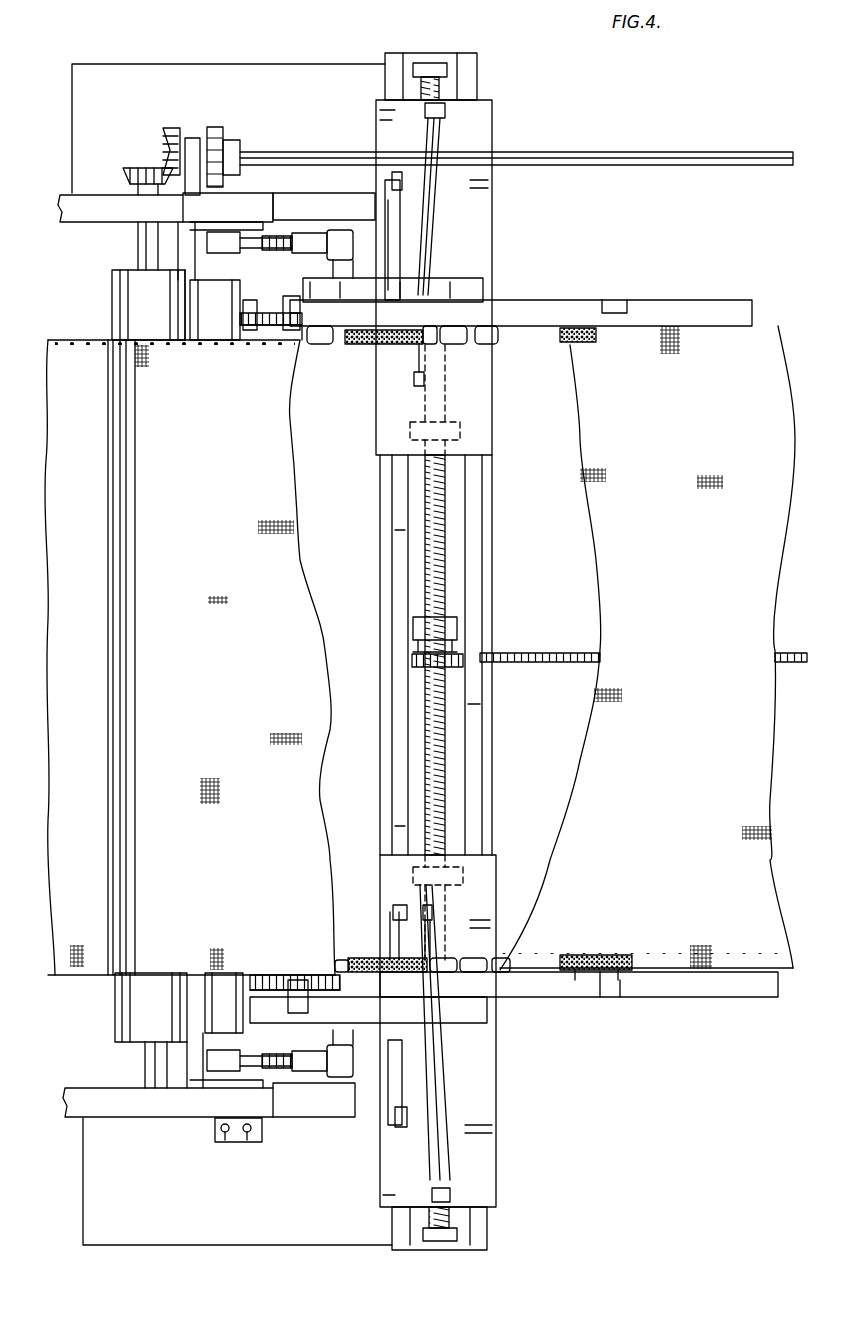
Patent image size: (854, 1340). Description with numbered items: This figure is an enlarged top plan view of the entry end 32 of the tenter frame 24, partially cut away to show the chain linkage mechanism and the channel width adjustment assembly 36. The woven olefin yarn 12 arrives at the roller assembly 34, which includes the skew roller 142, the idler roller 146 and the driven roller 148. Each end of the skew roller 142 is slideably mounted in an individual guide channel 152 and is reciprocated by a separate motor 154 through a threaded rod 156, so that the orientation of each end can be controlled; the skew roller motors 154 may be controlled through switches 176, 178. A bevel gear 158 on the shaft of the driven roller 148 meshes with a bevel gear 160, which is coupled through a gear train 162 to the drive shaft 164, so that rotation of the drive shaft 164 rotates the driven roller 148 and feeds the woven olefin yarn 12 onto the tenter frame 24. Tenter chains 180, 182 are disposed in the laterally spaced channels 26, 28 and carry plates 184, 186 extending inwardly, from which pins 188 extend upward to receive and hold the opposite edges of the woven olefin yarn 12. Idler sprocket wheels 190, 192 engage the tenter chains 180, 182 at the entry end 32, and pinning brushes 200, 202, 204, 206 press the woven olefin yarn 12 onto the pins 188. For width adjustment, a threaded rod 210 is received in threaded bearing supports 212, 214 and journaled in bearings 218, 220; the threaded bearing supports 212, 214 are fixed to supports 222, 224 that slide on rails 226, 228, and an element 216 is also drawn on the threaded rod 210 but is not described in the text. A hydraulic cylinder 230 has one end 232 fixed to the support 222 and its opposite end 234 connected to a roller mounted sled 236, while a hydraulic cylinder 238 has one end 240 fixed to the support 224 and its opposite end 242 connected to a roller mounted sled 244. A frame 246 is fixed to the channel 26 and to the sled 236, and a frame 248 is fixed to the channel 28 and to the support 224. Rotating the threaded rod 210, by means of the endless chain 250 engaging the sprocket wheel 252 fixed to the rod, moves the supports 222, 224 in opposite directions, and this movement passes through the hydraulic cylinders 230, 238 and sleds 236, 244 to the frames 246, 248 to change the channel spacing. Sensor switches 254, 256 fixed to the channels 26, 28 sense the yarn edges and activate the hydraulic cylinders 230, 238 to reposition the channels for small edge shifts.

The woven olefin yarn 12 is at (768, 590).
The tenter frame 24 is at (733, 286).
The channel 26 is at (745, 997).
The channel 28 is at (752, 310).
The entry end 32 is at (440, 1033).
The roller assembly 34 is at (78, 291).
The channel width adjustment assembly 36 is at (478, 1113).
The skew roller 142 is at (238, 975).
The idler roller 146 is at (203, 342).
The driven roller 148 is at (118, 312).
The guide channel 152 is at (195, 215).
The motor 154 is at (350, 948).
The threaded rod 156 is at (282, 232).
The bevel gear 158 is at (132, 165).
The bevel gear 160 is at (170, 130).
The gear train 162 is at (223, 130).
The drive shaft 164 is at (300, 160).
The switch 176 is at (222, 1140).
The switch 178 is at (255, 1132).
The tenter chain 180 is at (325, 972).
The tenter chain 182 is at (270, 340).
The plate 184 is at (490, 958).
The plate 186 is at (495, 346).
The pin 188 is at (636, 960).
The idler sprocket wheel 190 is at (248, 993).
The idler sprocket wheel 192 is at (250, 300).
The pinning brush 200 is at (375, 956).
The pinning brush 202 is at (585, 955).
The pinning brush 204 is at (372, 346).
The pinning brush 206 is at (590, 344).
The threaded rod 210 is at (450, 792).
The threaded bearing support 212 is at (464, 870).
The threaded bearing support 214 is at (461, 432).
The nut 216 is at (412, 632).
The bearing 218 is at (440, 62).
The bearing 220 is at (445, 1250).
The support 222 is at (498, 1088).
The support 224 is at (492, 246).
The rail 226 is at (396, 568).
The rail 228 is at (484, 566).
The hydraulic cylinder 230 is at (452, 1174).
The end 232 is at (452, 1196).
The end 234 is at (432, 912).
The roller mounted sled 236 is at (398, 1085).
The hydraulic cylinder 238 is at (436, 183).
The end 240 is at (446, 110).
The end 242 is at (425, 384).
The roller mounted sled 244 is at (400, 232).
The frame 246 is at (485, 1010).
The frame 248 is at (484, 292).
The endless chain 250 is at (560, 653).
The sprocket wheel 252 is at (420, 670).
The sensor switch 254 is at (300, 1015).
The sensor switch 256 is at (288, 304).